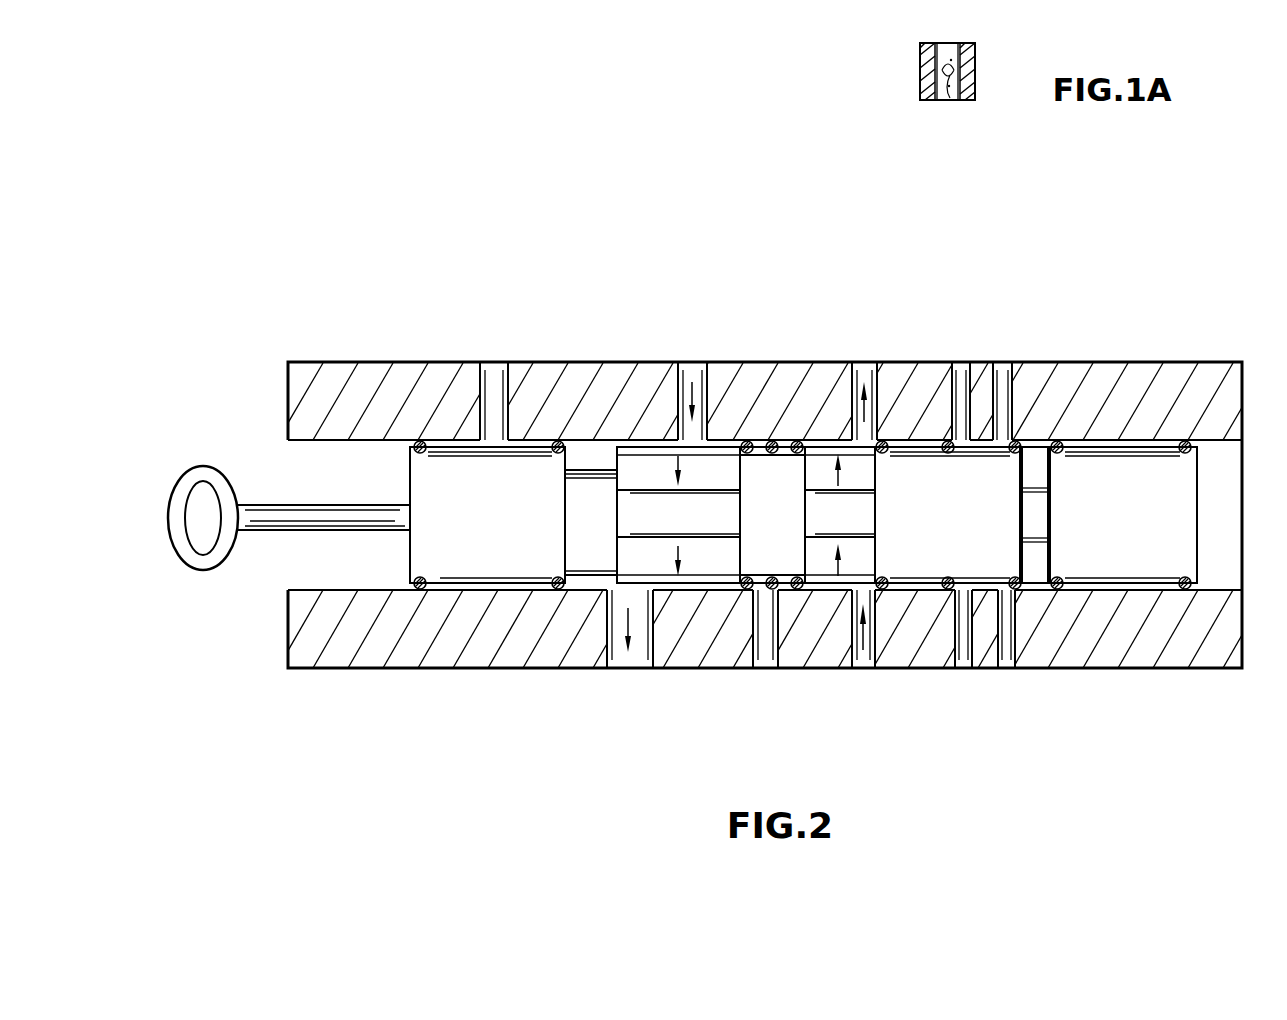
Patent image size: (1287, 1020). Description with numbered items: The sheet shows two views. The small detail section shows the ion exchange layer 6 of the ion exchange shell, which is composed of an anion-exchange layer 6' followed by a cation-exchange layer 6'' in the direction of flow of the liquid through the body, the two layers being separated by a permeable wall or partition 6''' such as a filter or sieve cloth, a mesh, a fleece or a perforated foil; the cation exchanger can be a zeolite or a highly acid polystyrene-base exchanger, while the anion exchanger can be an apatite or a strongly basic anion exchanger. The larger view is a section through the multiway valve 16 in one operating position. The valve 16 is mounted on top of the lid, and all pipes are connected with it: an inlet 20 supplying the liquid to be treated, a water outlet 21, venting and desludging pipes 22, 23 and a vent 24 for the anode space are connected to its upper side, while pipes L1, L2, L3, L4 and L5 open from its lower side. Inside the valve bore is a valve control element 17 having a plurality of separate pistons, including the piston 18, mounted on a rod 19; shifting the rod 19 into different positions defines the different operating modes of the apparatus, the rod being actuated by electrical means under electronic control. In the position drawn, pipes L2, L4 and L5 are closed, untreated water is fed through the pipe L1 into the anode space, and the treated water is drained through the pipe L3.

In FIG. 1A, the ion exchange layer 6 is at (925, 111).
In FIG. 1A, the anion-exchange layer 6' is at (992, 71).
In FIG. 1A, the cation-exchange layer 6'' is at (905, 71).
In FIG. 1A, the permeable wall or partition 6''' is at (954, 99).
In FIG. 2, the multiway valve 16 is at (1188, 373).
In FIG. 2, the valve control element 17 is at (390, 551).
In FIG. 2, the piston 18 is at (430, 478).
In FIG. 2, the rod 19 is at (265, 512).
In FIG. 2, the inlet 20 is at (694, 385).
In FIG. 2, the water outlet 21 is at (866, 385).
In FIG. 2, the venting pipe 22 is at (961, 375).
In FIG. 2, the desludging pipe 23 is at (1005, 375).
In FIG. 2, the vent 24 is at (493, 385).
In FIG. 2, the pipe L1 is at (629, 655).
In FIG. 2, the pipe L2 is at (765, 655).
In FIG. 2, the pipe L3 is at (861, 655).
In FIG. 2, the pipe L4 is at (966, 660).
In FIG. 2, the pipe L5 is at (1006, 655).